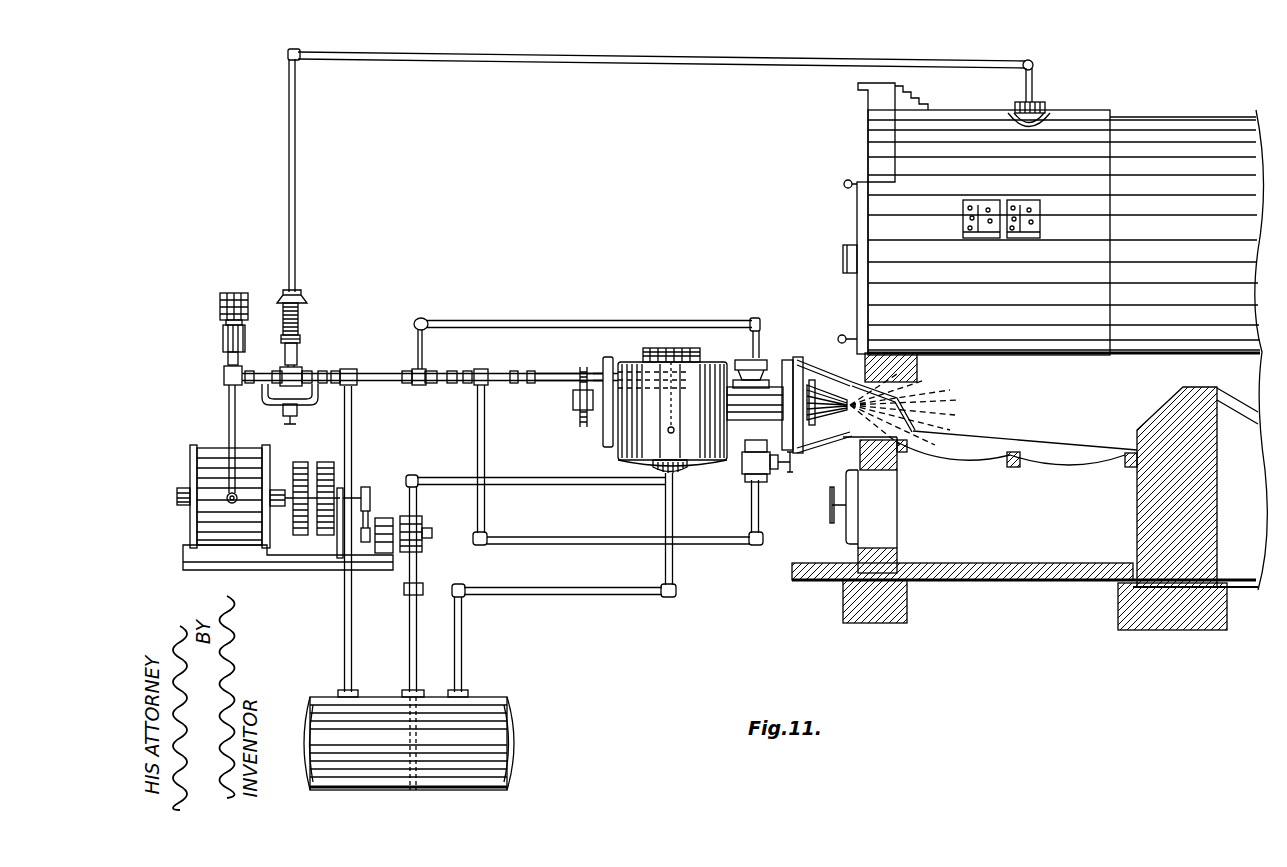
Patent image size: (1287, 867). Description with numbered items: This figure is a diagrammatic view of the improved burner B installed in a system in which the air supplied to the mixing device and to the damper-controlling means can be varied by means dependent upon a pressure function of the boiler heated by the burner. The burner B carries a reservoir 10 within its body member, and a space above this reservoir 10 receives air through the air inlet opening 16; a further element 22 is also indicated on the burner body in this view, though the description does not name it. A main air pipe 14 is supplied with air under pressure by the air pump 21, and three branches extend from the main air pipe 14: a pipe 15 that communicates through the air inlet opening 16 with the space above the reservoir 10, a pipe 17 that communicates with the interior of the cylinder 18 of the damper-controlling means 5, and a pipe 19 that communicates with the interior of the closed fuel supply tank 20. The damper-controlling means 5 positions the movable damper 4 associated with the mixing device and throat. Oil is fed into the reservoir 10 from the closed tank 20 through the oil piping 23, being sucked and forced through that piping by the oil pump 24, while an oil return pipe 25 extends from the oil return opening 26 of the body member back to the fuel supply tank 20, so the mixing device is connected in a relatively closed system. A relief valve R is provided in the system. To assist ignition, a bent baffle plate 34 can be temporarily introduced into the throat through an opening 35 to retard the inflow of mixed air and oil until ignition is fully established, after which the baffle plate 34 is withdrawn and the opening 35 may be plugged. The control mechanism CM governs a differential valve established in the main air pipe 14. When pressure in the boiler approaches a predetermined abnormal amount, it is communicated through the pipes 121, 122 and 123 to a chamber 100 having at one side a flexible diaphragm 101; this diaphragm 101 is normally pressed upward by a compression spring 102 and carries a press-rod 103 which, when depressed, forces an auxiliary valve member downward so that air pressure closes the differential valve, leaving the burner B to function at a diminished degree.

The movable damper 4 is at (767, 454).
The damper-controlling means 5 is at (724, 346).
The reservoir 10 is at (672, 407).
The main air pipe 14 is at (228, 405).
The pipe 15 is at (550, 372).
The air inlet opening 16 is at (672, 380).
The pipe 17 is at (556, 320).
The cylinder 18 is at (766, 360).
The pipe 19 is at (354, 448).
The fuel supply tank 20 is at (409, 743).
The air pump 21 is at (196, 522).
The float 22 is at (667, 434).
The oil piping 23 is at (540, 482).
The oil pump 24 is at (424, 548).
The oil return pipe 25 is at (573, 593).
The oil return opening 26 is at (684, 469).
The bent baffle plate 34 is at (918, 418).
The opening 35 is at (852, 392).
The chamber 100 is at (297, 292).
The flexible diaphragm 101 is at (299, 312).
The compression spring 102 is at (301, 333).
The press-rod 103 is at (298, 350).
The pipe 121 is at (1037, 92).
The pipe 122 is at (728, 72).
The pipe 123 is at (297, 183).
The relief valve R is at (222, 339).
The control mechanism CM is at (286, 353).
The burner B is at (712, 350).